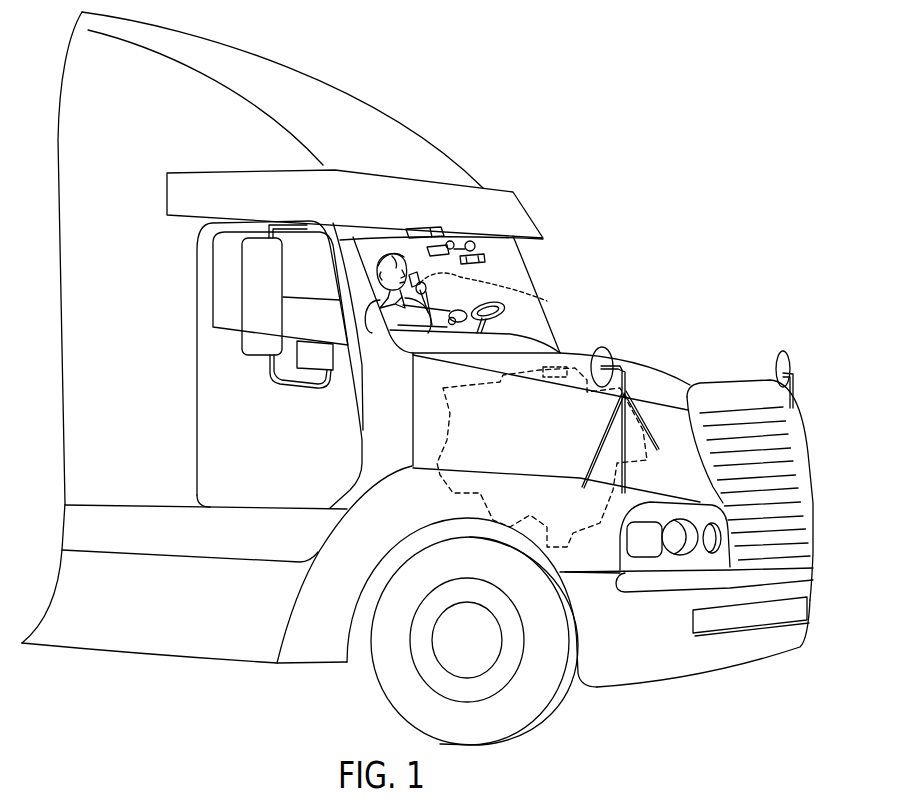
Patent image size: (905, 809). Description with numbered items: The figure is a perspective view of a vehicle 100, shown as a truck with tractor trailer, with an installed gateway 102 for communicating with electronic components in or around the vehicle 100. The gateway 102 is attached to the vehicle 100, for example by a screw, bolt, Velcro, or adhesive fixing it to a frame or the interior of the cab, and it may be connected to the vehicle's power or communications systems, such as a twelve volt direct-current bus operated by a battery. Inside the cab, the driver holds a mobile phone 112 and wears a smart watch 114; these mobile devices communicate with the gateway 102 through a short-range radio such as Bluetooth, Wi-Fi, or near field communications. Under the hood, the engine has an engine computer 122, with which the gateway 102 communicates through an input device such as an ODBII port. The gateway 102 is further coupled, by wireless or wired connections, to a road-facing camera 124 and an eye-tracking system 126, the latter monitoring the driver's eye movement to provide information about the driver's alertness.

The vehicle 100 is at (321, 71).
The gateway 102 is at (436, 229).
The mobile phone 112 is at (547, 301).
The smart watch 114 is at (455, 323).
The engine computer 122 is at (566, 365).
The road-facing camera 124 is at (478, 252).
The eye-tracking system 126 is at (446, 238).